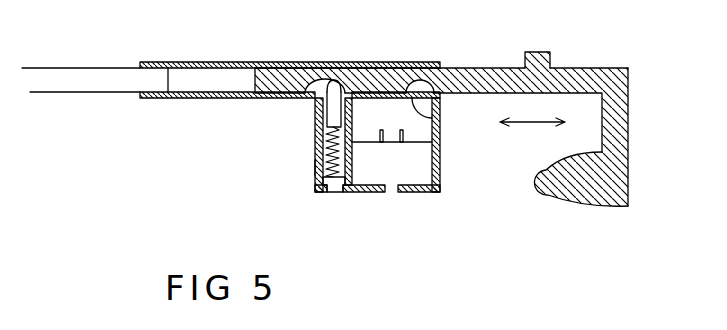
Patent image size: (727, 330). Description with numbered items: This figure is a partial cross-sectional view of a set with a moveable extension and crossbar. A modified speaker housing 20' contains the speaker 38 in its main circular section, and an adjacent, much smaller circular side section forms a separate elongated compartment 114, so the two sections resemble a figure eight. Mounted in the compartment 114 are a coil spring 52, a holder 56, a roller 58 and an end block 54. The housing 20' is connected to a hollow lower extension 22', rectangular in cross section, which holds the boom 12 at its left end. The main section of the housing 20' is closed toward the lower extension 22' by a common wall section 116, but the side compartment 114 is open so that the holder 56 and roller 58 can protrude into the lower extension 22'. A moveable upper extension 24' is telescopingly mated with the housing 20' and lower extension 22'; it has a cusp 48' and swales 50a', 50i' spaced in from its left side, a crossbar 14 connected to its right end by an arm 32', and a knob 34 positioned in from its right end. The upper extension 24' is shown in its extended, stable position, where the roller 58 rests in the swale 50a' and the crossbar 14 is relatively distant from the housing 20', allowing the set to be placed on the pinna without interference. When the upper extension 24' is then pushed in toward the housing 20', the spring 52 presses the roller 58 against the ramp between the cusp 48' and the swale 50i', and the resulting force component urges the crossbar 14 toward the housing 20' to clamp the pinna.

The boom 12 is at (45, 67).
The lower extension 22' is at (290, 54).
The upper extension 24' is at (441, 116).
The cusp 48' is at (347, 51).
The outer swale 50a' is at (334, 51).
The inner swale 50i' is at (440, 48).
The knob 34 is at (530, 52).
The arm 32' is at (658, 137).
The crossbar 14 is at (548, 186).
The coil spring 52 is at (320, 157).
The speaker 38 is at (410, 178).
The elongated compartment 114 is at (316, 168).
The roller 58 is at (320, 89).
The holder 56 is at (327, 117).
The end block 54 is at (330, 192).
The speaker housing 20' is at (422, 142).
The common wall section 116 is at (434, 104).